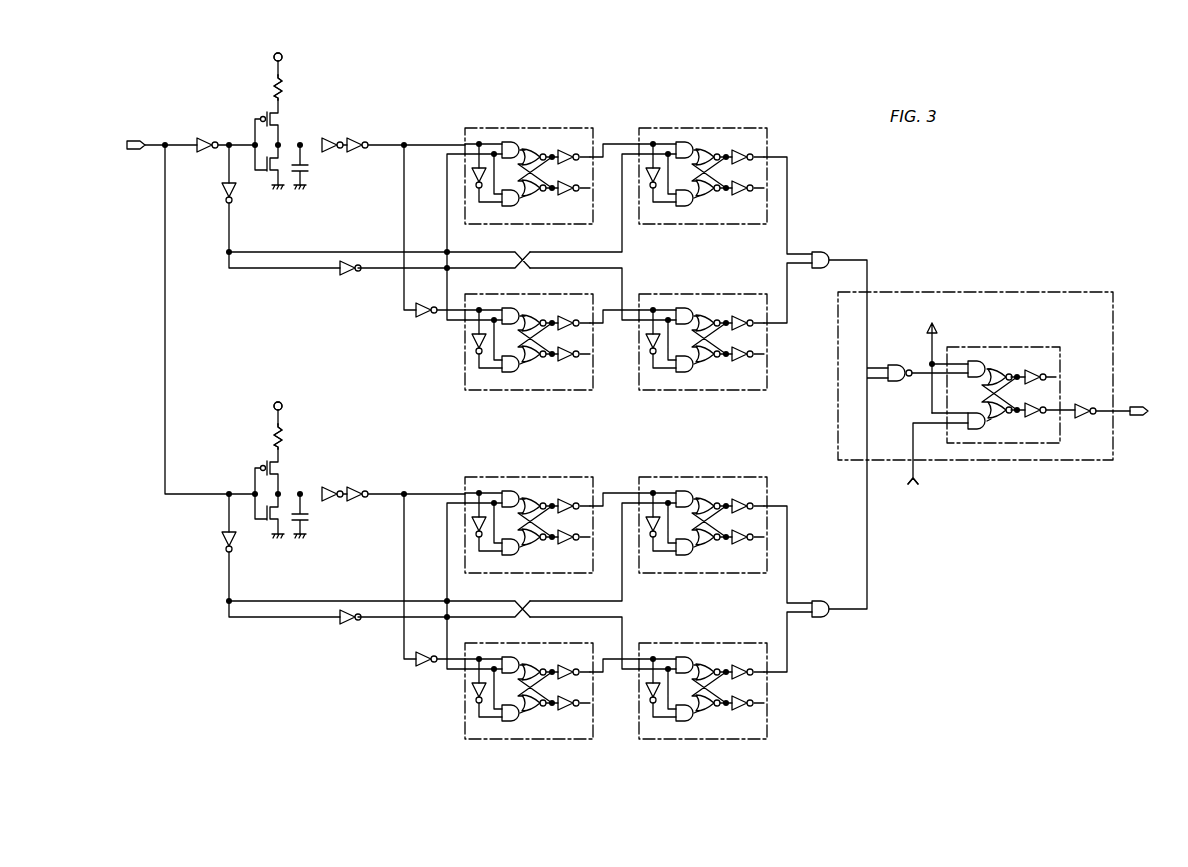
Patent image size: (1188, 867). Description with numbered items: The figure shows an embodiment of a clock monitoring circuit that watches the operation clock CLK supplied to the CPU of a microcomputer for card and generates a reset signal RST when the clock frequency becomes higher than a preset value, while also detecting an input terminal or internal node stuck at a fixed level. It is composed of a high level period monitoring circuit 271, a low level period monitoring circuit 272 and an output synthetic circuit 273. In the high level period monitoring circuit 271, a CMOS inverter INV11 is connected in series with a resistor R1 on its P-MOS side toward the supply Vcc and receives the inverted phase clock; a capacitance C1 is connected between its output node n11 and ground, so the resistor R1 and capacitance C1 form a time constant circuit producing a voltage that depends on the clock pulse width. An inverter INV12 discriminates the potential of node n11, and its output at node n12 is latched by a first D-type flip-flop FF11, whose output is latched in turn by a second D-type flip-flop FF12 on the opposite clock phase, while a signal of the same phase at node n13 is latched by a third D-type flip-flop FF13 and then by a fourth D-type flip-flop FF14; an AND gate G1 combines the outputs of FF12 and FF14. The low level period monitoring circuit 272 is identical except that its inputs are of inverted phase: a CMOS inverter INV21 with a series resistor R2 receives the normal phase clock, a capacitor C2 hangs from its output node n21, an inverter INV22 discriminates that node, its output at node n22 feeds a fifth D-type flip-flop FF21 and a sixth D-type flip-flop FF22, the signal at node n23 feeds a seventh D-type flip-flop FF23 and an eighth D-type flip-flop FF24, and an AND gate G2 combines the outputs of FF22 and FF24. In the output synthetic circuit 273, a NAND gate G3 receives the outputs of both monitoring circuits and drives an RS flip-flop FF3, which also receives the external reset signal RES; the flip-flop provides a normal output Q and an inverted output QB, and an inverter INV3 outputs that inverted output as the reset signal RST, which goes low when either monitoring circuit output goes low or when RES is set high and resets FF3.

The clock signal CLK is at (114, 145).
The CMOS inverter INV11 is at (249, 103).
The resistor R1 is at (292, 87).
The supply voltage Vcc is at (605, 223).
The output node n11 is at (284, 142).
The capacitance C1 is at (313, 167).
The inverter INV12 is at (352, 127).
The node n12 is at (406, 142).
The high level period monitoring circuit 271 is at (346, 303).
The node n13 is at (424, 322).
The first D-type flip-flop FF11 is at (570, 128).
The second D-type flip-flop FF12 is at (744, 128).
The third D-type flip-flop FF13 is at (500, 394).
The fourth D-type flip-flop FF14 is at (674, 394).
The AND gate G1 is at (817, 252).
The CMOS inverter INV21 is at (249, 452).
The resistor R2 is at (292, 436).
The output node n21 is at (284, 491).
The capacitor C2 is at (313, 516).
The inverter INV22 is at (352, 476).
The node n22 is at (406, 491).
The low level period monitoring circuit 272 is at (346, 652).
The node n23 is at (424, 671).
The fifth D-type flip-flop FF21 is at (570, 477).
The sixth D-type flip-flop FF22 is at (744, 477).
The seventh D-type flip-flop FF23 is at (500, 743).
The eighth D-type flip-flop FF24 is at (674, 743).
The AND gate G2 is at (817, 601).
The output synthetic circuit 273 is at (1048, 292).
The NAND gate G3 is at (900, 364).
The RS flip-flop FF3 is at (1030, 347).
The output Q is at (1047, 396).
The inverted output QB is at (1054, 421).
The inverter INV3 is at (1083, 403).
The reset signal RST is at (1143, 423).
The reset signal RES is at (909, 493).